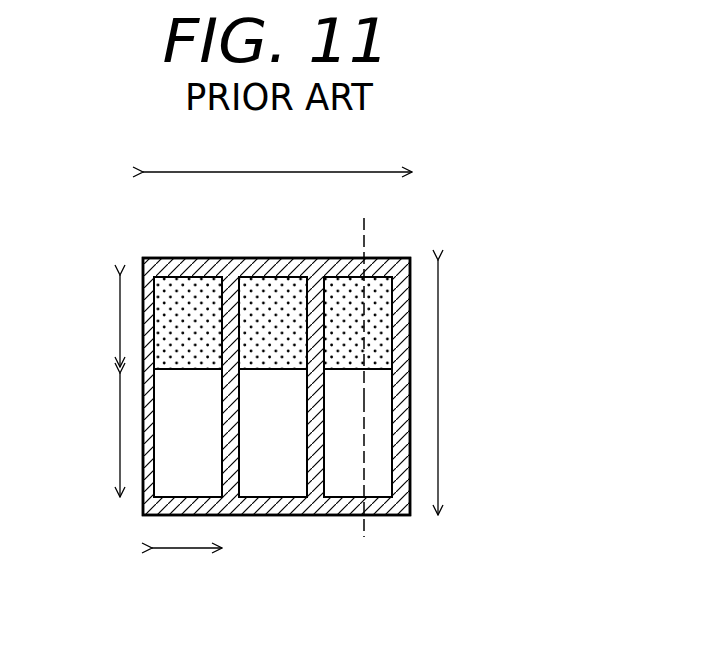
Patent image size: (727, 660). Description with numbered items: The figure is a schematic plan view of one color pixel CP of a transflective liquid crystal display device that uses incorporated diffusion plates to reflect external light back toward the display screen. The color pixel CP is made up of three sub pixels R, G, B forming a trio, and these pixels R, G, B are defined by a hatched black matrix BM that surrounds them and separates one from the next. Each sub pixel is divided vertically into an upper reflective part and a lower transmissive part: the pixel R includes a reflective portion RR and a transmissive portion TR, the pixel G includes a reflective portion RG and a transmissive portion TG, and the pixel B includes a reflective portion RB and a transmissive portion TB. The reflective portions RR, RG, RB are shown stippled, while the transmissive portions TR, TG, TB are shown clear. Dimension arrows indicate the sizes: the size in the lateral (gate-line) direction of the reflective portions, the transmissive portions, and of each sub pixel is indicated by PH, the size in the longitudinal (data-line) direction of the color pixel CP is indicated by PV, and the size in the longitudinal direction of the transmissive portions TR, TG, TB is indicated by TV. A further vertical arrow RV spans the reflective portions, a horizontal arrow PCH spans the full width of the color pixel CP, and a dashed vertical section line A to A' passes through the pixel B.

The color pixel CP is at (126, 247).
The black matrix BM is at (403, 258).
The transmissive portion TR is at (188, 387).
The transmissive portion TG is at (273, 387).
The transmissive portion TB is at (358, 387).
The reflective portion RR is at (188, 323).
The reflective portion RG is at (273, 323).
The reflective portion RB is at (358, 323).
The pixel R is at (188, 371).
The pixel G is at (273, 371).
The pixel B is at (358, 371).
The section line A is at (367, 294).
The section line A' is at (360, 483).
The pixel horizontal pitch PCH is at (277, 157).
The size in the longitudinal direction PV is at (460, 387).
The size in the lateral direction PH is at (187, 531).
The reflective region vertical length RV is at (98, 321).
The size in the longitudinal direction TV is at (99, 435).